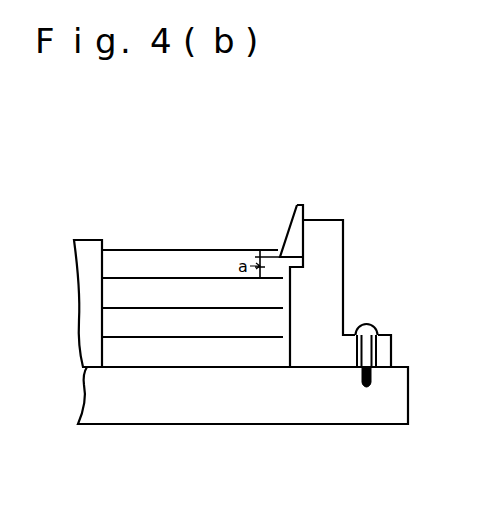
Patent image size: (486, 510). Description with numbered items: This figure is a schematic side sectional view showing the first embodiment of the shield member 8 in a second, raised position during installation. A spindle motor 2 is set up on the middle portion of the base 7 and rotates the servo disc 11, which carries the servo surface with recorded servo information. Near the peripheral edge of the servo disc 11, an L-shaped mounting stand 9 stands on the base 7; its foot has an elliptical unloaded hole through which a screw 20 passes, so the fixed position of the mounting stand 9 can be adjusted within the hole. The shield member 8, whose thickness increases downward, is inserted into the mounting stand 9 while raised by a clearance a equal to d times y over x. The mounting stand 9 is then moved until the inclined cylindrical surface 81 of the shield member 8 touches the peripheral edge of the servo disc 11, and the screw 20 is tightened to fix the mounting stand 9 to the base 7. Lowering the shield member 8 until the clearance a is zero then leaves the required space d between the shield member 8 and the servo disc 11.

The spindle motor 2 is at (88, 237).
The base 7 is at (298, 425).
The shield member 8 is at (302, 204).
The cylindrical surface 81 is at (285, 225).
The mounting stand 9 is at (343, 220).
The servo disc 11 is at (150, 248).
The screw 20 is at (373, 328).